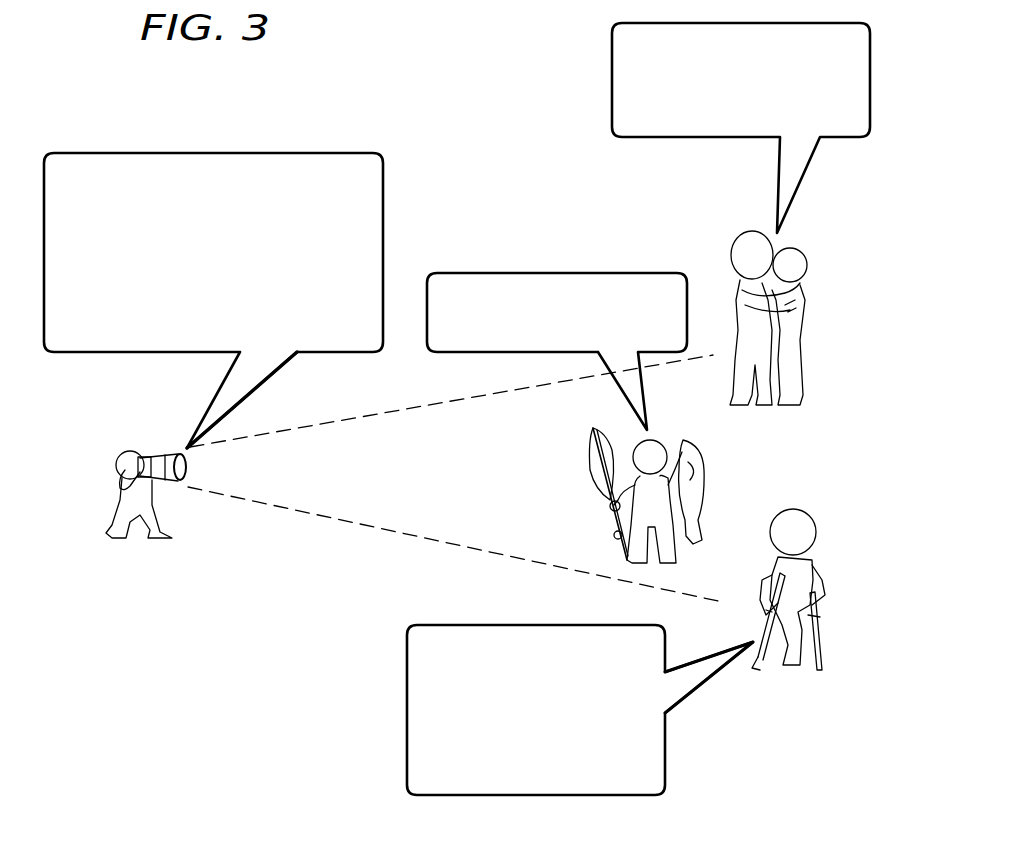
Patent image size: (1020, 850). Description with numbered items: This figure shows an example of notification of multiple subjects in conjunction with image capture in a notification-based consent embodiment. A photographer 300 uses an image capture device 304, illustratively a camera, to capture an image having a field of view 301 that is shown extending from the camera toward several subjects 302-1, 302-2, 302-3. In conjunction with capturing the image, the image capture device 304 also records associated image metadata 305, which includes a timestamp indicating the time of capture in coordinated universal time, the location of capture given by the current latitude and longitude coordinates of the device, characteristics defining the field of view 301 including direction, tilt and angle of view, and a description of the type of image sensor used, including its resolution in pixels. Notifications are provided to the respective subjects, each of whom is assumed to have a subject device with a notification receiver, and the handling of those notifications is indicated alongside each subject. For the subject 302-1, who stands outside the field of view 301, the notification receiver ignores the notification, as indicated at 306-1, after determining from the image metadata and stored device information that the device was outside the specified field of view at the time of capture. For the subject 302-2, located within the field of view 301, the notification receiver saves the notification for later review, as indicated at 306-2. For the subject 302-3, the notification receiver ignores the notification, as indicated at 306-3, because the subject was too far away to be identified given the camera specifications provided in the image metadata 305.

The photographer 300 is at (100, 432).
The field of view 301 is at (282, 481).
The image capture device 304 is at (172, 455).
The image metadata 305 is at (285, 153).
The subject 302-1 is at (718, 237).
The subject 302-2 is at (578, 476).
The subject 302-3 is at (797, 680).
The notification handling 306-1 is at (612, 73).
The notification handling 306-2 is at (517, 273).
The notification handling 306-3 is at (407, 706).